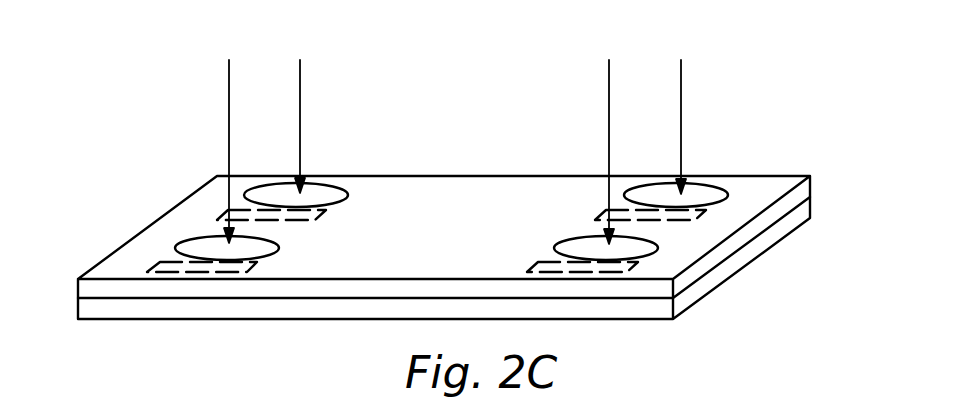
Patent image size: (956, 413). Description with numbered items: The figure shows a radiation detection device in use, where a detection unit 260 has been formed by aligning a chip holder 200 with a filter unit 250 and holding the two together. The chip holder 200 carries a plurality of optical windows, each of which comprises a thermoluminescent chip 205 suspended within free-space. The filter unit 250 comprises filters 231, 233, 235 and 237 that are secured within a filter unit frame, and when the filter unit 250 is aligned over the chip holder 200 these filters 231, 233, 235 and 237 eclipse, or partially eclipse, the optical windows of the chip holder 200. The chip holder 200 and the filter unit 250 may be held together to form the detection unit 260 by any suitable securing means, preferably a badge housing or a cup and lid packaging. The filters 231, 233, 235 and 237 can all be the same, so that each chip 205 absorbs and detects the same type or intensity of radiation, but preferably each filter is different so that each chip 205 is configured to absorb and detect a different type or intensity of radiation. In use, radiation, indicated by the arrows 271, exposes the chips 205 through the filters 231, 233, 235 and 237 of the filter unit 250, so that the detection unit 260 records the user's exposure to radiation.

The chip holder 200 is at (78, 309).
The filter unit 250 is at (78, 290).
The detection unit 260 is at (450, 248).
The thermoluminescent chip 205 is at (253, 266).
The filter 231 is at (203, 246).
The filter 233 is at (310, 190).
The filter 235 is at (692, 192).
The filter 237 is at (658, 244).
The arrows 271 is at (229, 112).